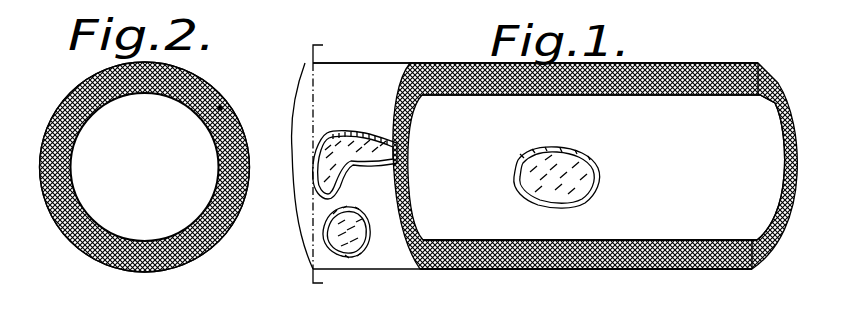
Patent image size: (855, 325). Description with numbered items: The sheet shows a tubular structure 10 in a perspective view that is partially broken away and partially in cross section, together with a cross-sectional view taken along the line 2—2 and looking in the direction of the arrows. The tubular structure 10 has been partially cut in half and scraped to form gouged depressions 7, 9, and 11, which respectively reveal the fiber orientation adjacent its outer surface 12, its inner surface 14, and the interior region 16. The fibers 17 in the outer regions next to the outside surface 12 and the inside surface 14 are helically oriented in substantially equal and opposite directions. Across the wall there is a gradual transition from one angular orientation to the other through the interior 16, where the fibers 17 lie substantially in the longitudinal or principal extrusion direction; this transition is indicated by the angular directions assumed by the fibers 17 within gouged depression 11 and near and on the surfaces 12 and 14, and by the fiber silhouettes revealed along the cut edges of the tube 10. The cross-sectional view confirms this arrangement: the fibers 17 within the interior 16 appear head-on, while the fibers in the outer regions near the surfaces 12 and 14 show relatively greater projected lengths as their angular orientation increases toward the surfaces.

In FIG. 1, the section line 2— 2 is at (368, 283).
In FIG. 1, the gouged depression 7 is at (365, 217).
In FIG. 1, the gouged depression 9 is at (599, 182).
In FIG. 2, the tubular structure 10 is at (77, 248).
In FIG. 1, the tubular structure 10 is at (398, 270).
In FIG. 1, the gouged depression 11 is at (317, 171).
In FIG. 2, the outer surface 12 is at (189, 78).
In FIG. 1, the outer surface 12 is at (390, 138).
In FIG. 2, the inner surface 14 is at (194, 91).
In FIG. 1, the inner surface 14 is at (755, 216).
In FIG. 2, the interior region 16 is at (238, 132).
In FIG. 1, the interior region 16 is at (707, 258).
In FIG. 2, the fibers 17 is at (221, 108).
In FIG. 1, the fibers 17 is at (345, 135).